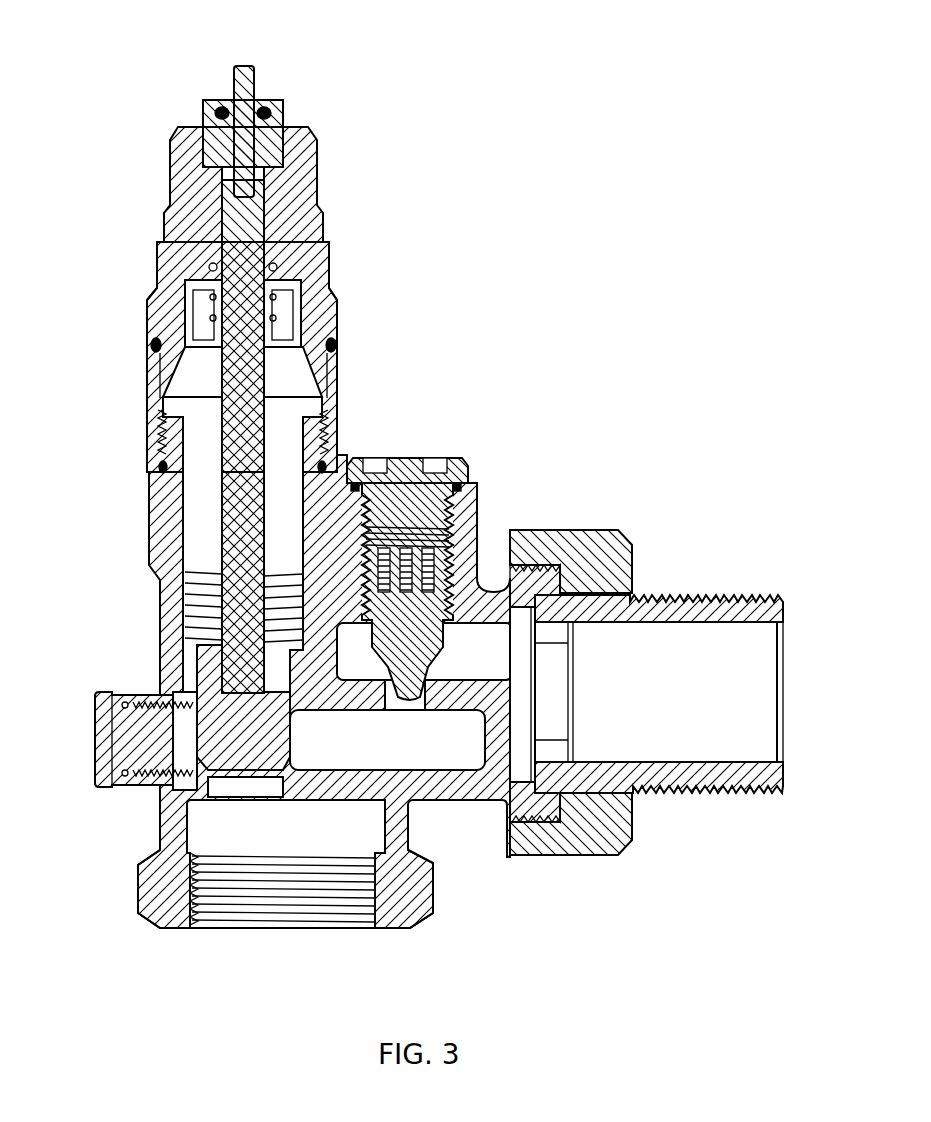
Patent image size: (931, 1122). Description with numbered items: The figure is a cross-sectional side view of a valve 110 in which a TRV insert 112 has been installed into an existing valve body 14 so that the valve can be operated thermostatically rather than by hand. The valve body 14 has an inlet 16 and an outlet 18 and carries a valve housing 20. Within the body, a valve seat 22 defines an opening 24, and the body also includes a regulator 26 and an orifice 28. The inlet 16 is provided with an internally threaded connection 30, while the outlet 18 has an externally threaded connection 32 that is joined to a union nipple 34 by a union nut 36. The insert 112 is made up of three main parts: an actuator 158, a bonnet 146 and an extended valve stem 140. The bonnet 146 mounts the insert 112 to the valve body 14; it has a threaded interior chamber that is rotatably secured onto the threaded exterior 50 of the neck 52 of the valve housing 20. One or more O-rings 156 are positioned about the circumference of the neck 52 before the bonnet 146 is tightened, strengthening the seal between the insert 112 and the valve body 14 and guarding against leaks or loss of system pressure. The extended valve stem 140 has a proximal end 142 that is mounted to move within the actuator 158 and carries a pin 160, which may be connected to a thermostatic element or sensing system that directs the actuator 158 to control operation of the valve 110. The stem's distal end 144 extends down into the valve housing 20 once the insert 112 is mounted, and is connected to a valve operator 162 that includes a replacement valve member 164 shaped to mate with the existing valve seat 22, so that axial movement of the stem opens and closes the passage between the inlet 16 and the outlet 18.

The valve 110 is at (436, 532).
The TRV insert 112 is at (355, 266).
The valve body 14 is at (170, 628).
The inlet 16 is at (290, 932).
The outlet 18 is at (795, 684).
The valve housing 20 is at (138, 536).
The valve seat 22 is at (163, 818).
The opening 24 is at (240, 803).
The regulator 26 is at (456, 457).
The orifice 28 is at (409, 716).
The internally threaded connection 30 is at (383, 872).
The externally threaded connection 32 is at (532, 826).
The union nipple 34 is at (665, 597).
The union nut 36 is at (563, 530).
The threaded exterior 50 is at (330, 445).
The neck 52 is at (328, 418).
The extended valve stem 140 is at (240, 527).
The proximal end 142 is at (243, 233).
The distal end 144 is at (228, 680).
The bonnet 146 is at (320, 390).
The O-rings 156 is at (336, 340).
The actuator 158 is at (318, 163).
The pin 160 is at (240, 72).
The valve operator 162 is at (230, 740).
The replacement valve member 164 is at (160, 795).